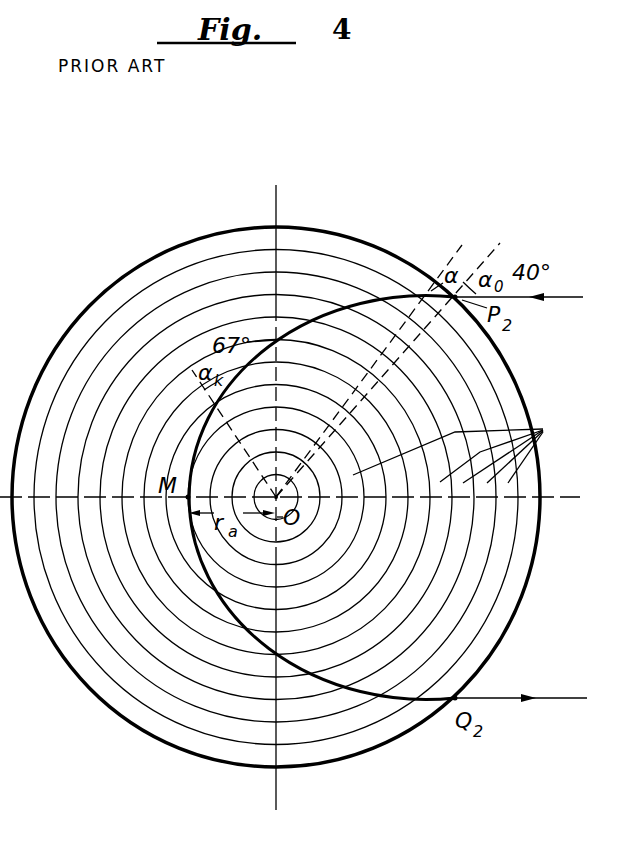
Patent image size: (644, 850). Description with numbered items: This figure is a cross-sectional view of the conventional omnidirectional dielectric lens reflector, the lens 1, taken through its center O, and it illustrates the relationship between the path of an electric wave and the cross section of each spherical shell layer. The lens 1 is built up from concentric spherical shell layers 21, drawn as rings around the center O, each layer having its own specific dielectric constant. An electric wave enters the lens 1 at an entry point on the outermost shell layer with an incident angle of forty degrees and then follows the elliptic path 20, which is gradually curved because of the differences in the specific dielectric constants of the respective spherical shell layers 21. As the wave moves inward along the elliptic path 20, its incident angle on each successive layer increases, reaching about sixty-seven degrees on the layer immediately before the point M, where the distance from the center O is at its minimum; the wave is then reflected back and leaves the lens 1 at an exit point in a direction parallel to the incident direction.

The lens 1 is at (529, 593).
The elliptic path 20 is at (382, 298).
The spherical shell layers 21 is at (465, 451).